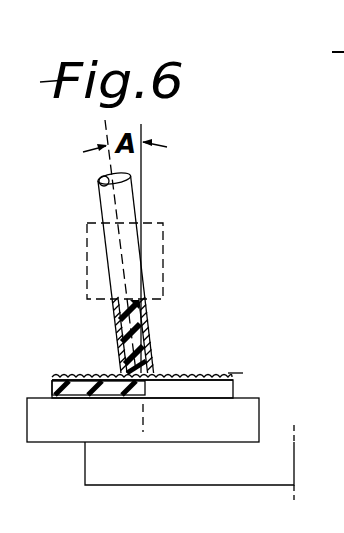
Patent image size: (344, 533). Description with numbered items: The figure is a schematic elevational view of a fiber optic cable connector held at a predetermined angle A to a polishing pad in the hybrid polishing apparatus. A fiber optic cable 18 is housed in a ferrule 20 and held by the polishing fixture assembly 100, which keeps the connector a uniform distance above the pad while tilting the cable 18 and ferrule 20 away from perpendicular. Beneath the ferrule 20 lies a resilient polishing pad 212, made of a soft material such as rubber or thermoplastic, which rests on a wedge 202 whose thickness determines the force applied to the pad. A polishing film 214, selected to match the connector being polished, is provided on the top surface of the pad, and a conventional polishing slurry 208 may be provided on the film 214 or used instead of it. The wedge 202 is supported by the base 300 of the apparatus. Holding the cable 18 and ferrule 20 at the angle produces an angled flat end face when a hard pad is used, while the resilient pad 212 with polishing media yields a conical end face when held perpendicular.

The polishing fixture assembly 100 is at (168, 264).
The fiber optic cable 18 is at (118, 318).
The ferrule 20 is at (150, 318).
The polishing slurry 208 is at (68, 372).
The resilient polishing pad 212 is at (50, 390).
The polishing film 214 is at (205, 378).
The wedge 202 is at (248, 412).
The base 300 is at (132, 473).